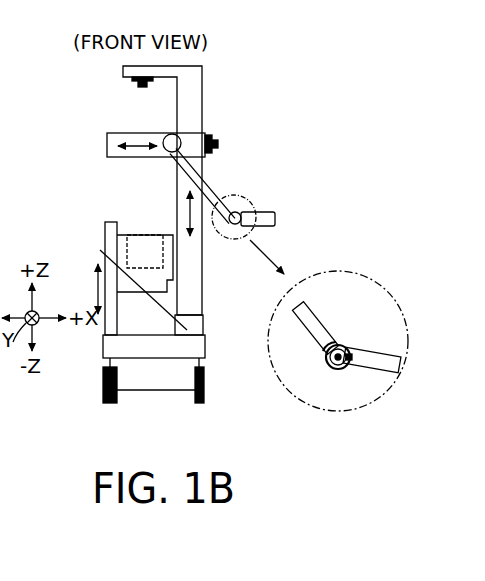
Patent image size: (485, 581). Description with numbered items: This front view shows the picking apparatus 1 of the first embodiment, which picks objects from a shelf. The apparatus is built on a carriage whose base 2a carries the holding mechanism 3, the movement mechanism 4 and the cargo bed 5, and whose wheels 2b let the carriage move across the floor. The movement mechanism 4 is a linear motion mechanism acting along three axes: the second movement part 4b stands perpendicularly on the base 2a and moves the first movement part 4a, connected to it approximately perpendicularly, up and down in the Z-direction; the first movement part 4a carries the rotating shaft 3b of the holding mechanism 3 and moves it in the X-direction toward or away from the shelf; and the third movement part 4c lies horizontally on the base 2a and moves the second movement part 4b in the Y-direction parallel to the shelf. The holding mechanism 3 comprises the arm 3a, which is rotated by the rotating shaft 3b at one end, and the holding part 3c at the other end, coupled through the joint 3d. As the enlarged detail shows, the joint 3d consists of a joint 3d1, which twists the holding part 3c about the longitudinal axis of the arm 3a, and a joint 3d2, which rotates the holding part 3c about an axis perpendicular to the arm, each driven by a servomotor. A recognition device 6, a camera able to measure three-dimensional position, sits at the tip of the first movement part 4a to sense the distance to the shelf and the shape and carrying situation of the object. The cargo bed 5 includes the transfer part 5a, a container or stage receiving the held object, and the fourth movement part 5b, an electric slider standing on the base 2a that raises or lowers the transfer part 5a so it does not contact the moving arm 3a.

The picking apparatus 1 is at (216, 44).
The base 2a is at (203, 350).
The wheels 2b is at (120, 383).
The holding mechanism 3 is at (287, 272).
The arm 3a is at (232, 200).
The rotating shaft 3b is at (232, 162).
The holding part 3c is at (257, 215).
The joint 3d is at (257, 228).
The joint 3d1 is at (341, 332).
The joint 3d2 is at (358, 356).
The movement mechanism 4 is at (111, 200).
The first movement part 4a is at (107, 134).
The second movement part 4b is at (180, 192).
The third movement part 4c is at (118, 257).
The cargo bed 5 is at (137, 243).
The transfer part 5a is at (160, 242).
The fourth movement part 5b is at (112, 285).
The recognition device 6 is at (133, 80).